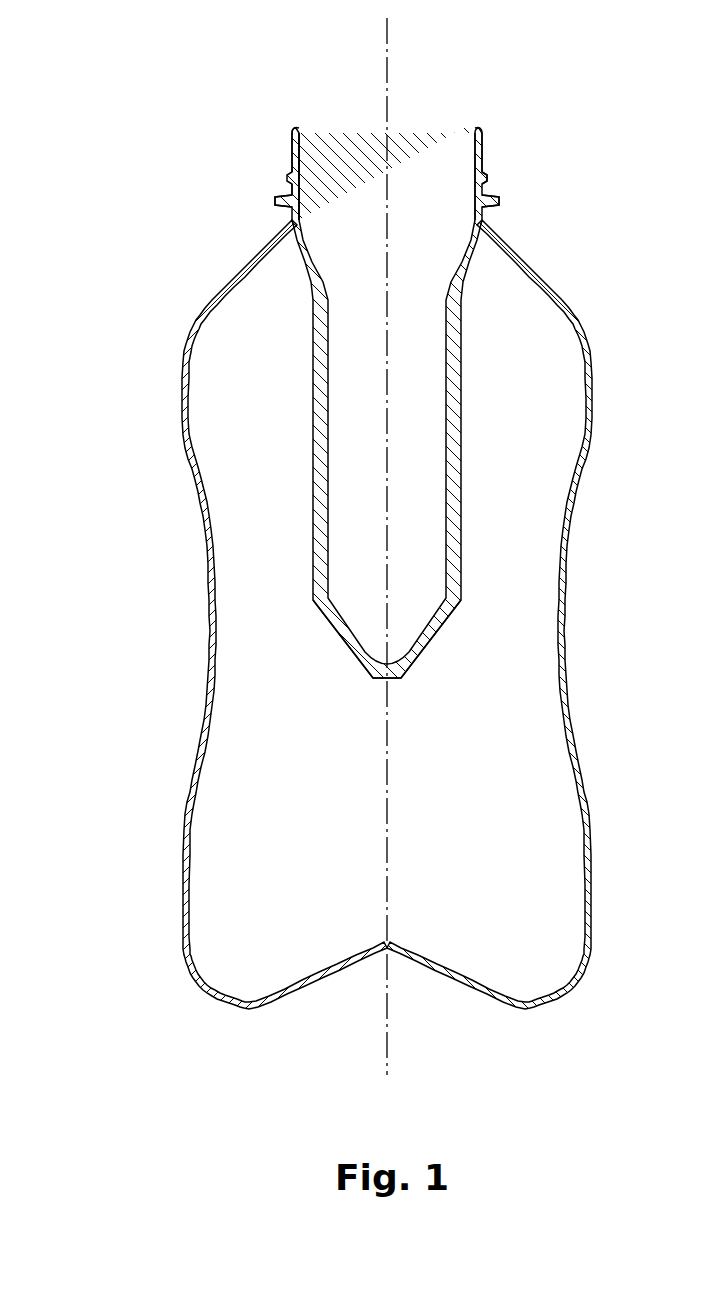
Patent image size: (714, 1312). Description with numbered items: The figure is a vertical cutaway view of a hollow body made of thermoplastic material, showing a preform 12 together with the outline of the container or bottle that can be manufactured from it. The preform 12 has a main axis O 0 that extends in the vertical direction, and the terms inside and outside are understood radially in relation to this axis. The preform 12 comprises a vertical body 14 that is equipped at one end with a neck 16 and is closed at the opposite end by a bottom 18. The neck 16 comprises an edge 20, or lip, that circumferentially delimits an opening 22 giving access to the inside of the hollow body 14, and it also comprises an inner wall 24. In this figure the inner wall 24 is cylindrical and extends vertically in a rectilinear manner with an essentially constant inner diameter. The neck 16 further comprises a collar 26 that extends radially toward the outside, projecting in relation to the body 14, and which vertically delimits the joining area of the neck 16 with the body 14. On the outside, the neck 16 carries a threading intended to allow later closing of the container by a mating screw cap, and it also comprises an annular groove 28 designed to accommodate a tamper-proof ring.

The main axis 0 is at (388, 60).
The preform 12 is at (122, 282).
The body 14 is at (455, 500).
The neck 16 is at (484, 163).
The bottom 18 is at (380, 679).
The edge 20 is at (291, 126).
The opening 22 is at (437, 148).
The inner wall 24 is at (301, 157).
The collar 26 is at (277, 201).
The annular groove 28 is at (485, 184).